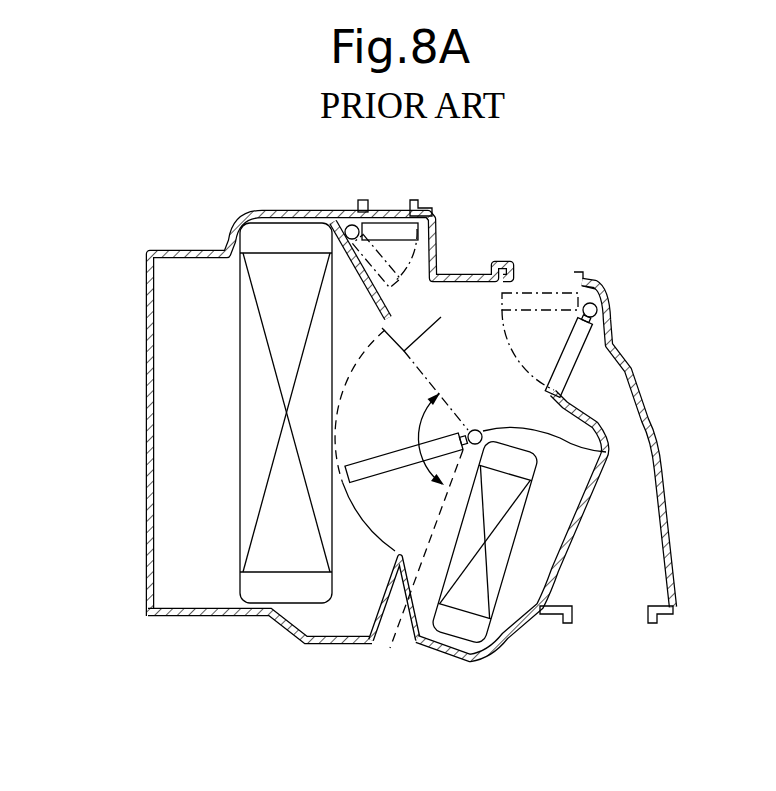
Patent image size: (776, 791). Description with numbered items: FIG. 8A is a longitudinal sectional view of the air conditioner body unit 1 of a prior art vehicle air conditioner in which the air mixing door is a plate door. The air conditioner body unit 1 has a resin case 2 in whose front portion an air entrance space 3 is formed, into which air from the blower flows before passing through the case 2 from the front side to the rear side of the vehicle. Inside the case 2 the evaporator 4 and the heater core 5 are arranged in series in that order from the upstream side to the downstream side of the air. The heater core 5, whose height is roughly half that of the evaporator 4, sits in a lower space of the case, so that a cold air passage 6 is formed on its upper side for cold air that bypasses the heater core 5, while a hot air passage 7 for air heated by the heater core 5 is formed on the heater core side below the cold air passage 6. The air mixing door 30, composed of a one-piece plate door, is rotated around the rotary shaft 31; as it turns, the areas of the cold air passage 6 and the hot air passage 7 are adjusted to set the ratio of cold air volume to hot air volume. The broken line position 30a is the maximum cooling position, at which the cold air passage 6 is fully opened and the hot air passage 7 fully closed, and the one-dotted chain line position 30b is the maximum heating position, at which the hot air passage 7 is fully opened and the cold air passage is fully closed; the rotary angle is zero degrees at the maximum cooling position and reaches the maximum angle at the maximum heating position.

The air conditioner body unit 1 is at (288, 188).
The case 2 is at (240, 213).
The air entrance space 3 is at (185, 282).
The evaporator 4 is at (262, 444).
The heater core 5 is at (500, 557).
The cold air passage 6 is at (448, 352).
The hot air passage 7 is at (437, 535).
The air mixing door 30 is at (368, 483).
The maximum cooling position 30a is at (390, 648).
The maximum heating position 30b is at (441, 317).
The rotary shaft 31 is at (606, 452).